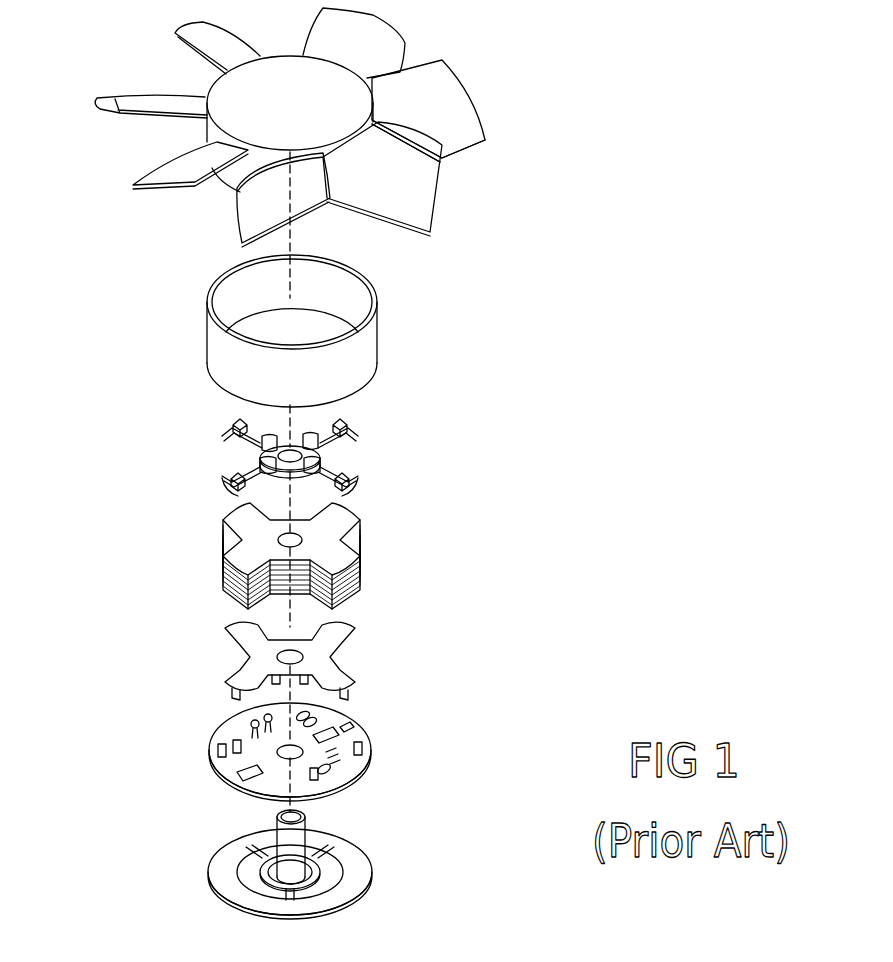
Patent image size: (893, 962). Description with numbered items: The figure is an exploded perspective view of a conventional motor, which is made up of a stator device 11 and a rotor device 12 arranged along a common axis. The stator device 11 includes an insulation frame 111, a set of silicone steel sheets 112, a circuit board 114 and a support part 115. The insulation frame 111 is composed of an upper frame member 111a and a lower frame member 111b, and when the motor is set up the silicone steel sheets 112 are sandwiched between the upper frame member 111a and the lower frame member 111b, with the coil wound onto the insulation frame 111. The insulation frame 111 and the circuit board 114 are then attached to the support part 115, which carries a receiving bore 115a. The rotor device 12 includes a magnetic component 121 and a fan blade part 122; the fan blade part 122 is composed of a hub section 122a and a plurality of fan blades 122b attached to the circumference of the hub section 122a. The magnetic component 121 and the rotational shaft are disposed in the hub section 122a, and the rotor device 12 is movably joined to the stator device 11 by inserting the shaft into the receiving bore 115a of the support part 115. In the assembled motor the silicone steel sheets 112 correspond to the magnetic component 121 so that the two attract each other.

The stator device 11 is at (112, 455).
The rotor device 12 is at (329, 127).
The insulation frame 111 is at (410, 559).
The upper frame member 111a is at (355, 478).
The lower frame member 111b is at (327, 670).
The set of silicone steel sheets 112 is at (272, 528).
The circuit board 114 is at (267, 752).
The support part 115 is at (303, 864).
The receiving bore 115a is at (270, 852).
The magnetic component 121 is at (255, 297).
The fan blade part 122 is at (467, 85).
The hub section 122a is at (245, 93).
The fan blades 122b is at (452, 130).